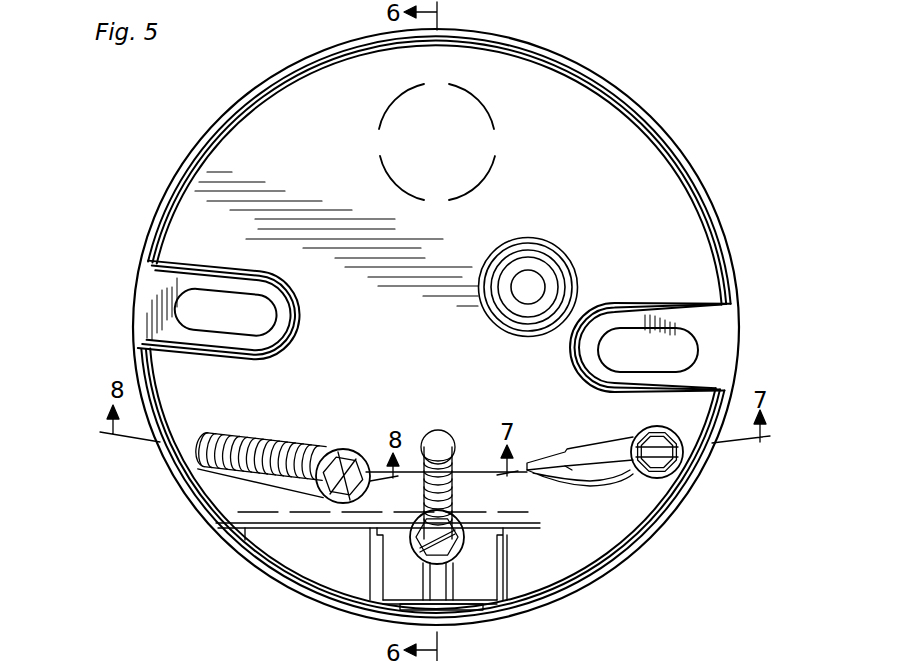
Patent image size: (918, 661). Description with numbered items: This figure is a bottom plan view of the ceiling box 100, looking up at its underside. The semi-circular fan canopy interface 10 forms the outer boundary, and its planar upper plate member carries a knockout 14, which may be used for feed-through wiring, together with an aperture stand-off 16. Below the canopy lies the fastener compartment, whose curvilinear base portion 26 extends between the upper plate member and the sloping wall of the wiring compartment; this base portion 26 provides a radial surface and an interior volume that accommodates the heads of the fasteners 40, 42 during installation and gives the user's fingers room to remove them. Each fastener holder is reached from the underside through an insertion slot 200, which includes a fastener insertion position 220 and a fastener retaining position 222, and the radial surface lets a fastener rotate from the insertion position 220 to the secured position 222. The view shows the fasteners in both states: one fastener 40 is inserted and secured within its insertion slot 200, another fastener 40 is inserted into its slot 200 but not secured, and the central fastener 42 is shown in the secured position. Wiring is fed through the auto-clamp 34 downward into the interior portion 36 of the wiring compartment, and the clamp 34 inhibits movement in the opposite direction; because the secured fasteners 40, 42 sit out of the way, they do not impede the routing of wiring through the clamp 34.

The fan canopy interface 10 is at (640, 102).
The knockout 14 is at (451, 142).
The aperture stand-off 16 is at (531, 277).
The curvilinear base portion 26 is at (372, 426).
The auto-clamp portion 34 is at (383, 573).
The interior portion of the wiring compartment 36 is at (573, 573).
The fastener 40 is at (263, 448).
The fastener 42 is at (440, 452).
The ceiling box 100 is at (750, 154).
The insertion slot 200 is at (600, 452).
The fastener insertion position 220 is at (620, 463).
The fastener retaining position 222 is at (572, 470).